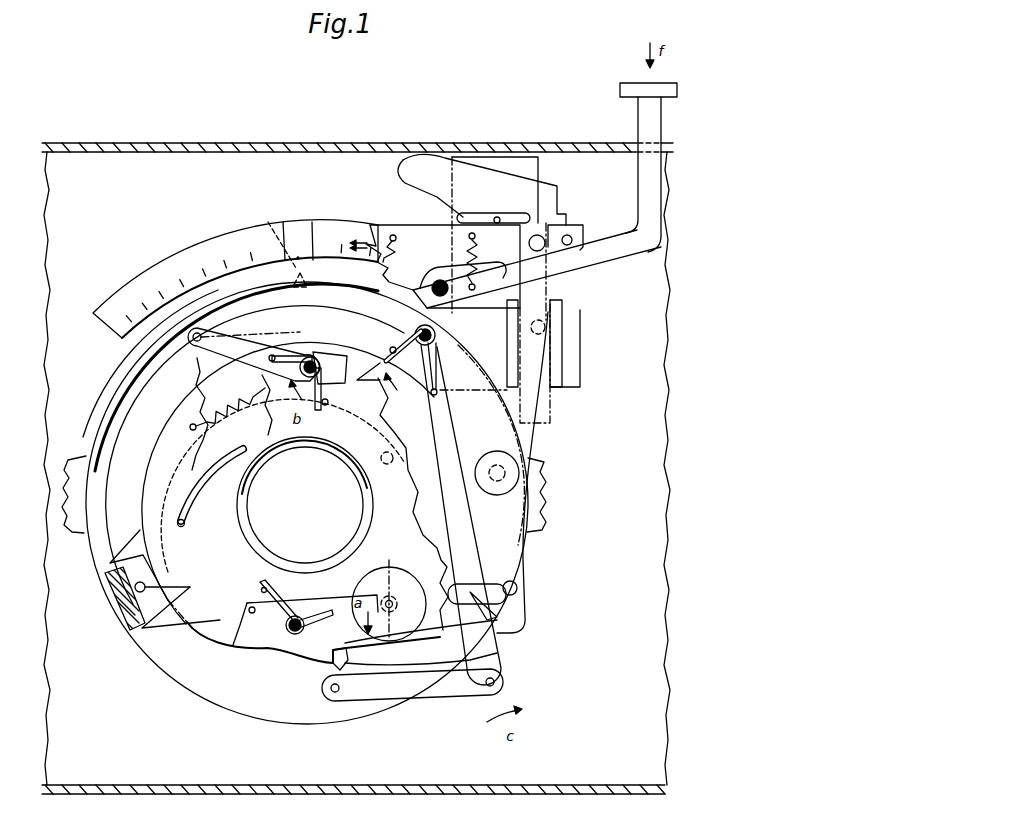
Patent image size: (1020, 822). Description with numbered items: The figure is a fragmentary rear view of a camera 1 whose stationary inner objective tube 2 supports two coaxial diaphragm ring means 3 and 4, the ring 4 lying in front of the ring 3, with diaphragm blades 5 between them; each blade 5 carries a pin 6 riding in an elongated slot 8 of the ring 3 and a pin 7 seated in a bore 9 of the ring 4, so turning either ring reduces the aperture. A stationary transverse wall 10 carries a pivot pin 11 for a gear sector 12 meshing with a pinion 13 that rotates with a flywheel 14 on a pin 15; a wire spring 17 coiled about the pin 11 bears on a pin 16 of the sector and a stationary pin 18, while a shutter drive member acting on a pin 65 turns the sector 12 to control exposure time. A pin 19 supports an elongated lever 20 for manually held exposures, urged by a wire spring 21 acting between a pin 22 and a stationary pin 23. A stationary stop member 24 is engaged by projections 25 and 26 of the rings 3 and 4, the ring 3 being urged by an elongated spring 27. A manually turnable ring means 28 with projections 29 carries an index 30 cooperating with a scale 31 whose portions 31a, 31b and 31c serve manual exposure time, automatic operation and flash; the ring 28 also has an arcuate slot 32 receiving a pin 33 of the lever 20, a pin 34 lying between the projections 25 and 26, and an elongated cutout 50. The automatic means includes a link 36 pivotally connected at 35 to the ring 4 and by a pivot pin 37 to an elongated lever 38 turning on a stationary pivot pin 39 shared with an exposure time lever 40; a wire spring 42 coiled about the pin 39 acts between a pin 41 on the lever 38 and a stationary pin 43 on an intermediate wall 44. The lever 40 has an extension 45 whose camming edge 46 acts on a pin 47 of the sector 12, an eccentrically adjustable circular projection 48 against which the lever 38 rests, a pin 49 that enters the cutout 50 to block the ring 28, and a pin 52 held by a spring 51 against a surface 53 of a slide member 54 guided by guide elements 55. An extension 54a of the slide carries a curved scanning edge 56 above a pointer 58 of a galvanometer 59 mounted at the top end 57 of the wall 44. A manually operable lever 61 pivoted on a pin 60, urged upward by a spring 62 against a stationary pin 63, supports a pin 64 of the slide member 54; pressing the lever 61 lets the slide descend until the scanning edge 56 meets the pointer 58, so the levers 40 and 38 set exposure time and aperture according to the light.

The camera 1 is at (313, 142).
The stationary inner objective tube 2 is at (248, 521).
The diaphragm ring means 3 is at (212, 607).
The diaphragm ring means 4 is at (143, 515).
The diaphragm blade 5 is at (286, 450).
The pin 6 is at (186, 529).
The pin 7 is at (390, 476).
The elongated slot 8 is at (223, 466).
The bore 9 is at (383, 460).
The stationary transverse wall 10 is at (364, 529).
The pivot pin 11 is at (303, 607).
The gear sector 12 is at (343, 603).
The pinion 13 is at (393, 597).
The flywheel 14 is at (377, 572).
The shaft or pin 15 is at (393, 604).
The pin 16 is at (318, 622).
The wire spring 17 is at (272, 603).
The stationary pin 18 is at (260, 582).
The pin or shaft 19 is at (314, 362).
The elongated lever 20 is at (253, 348).
The wire spring 21 is at (297, 357).
The pin 22 is at (273, 355).
The stationary pin 23 is at (327, 405).
The stop member 24 is at (118, 598).
The projection 25 is at (158, 623).
The projection 26 is at (128, 558).
The elongated spring 27 is at (237, 398).
The manually turnable ring means 28 is at (103, 420).
The projections 29 is at (78, 463).
The index 30 is at (235, 270).
The scale 31 is at (225, 230).
The scale portion 31a is at (188, 252).
The central scale portion 31b is at (300, 230).
The scale portion 31c is at (338, 230).
The elongated arcuate slot 32 is at (230, 320).
The pin 33 is at (195, 334).
The pin 34 is at (172, 592).
The pivotal connection 35 is at (336, 694).
The link 36 is at (440, 692).
The pivot pin 37 is at (497, 683).
The elongated lever 38 is at (455, 440).
The stationary pivot pin 39 is at (437, 334).
The lever 40 is at (532, 435).
The pin 41 is at (440, 390).
The wire spring 42 is at (433, 362).
The stationary pin 43 is at (356, 373).
The stationary intermediate wall 44 is at (405, 230).
The extension 45 is at (383, 653).
The camming edge 46 is at (363, 652).
The pin 47 is at (330, 655).
The projection 48 is at (505, 480).
The pin 49 is at (520, 588).
The elongated cutout 50 is at (475, 590).
The spring 51 is at (394, 260).
The pin 52 is at (545, 322).
The surface 53 is at (557, 346).
The elongated slide member 54 is at (573, 285).
The extension 54a is at (423, 167).
The guide elements 55 is at (557, 360).
The curved scanning edge 56 is at (438, 193).
The top end 57 is at (445, 266).
The pointer 58 is at (497, 216).
The electrical instrument 59 is at (495, 160).
The pin 60 is at (462, 281).
The manually operable lever 61 is at (648, 194).
The spring 62 is at (478, 259).
The stationary pin 63 is at (570, 234).
The pin 64 is at (540, 232).
The pin 65 is at (245, 598).